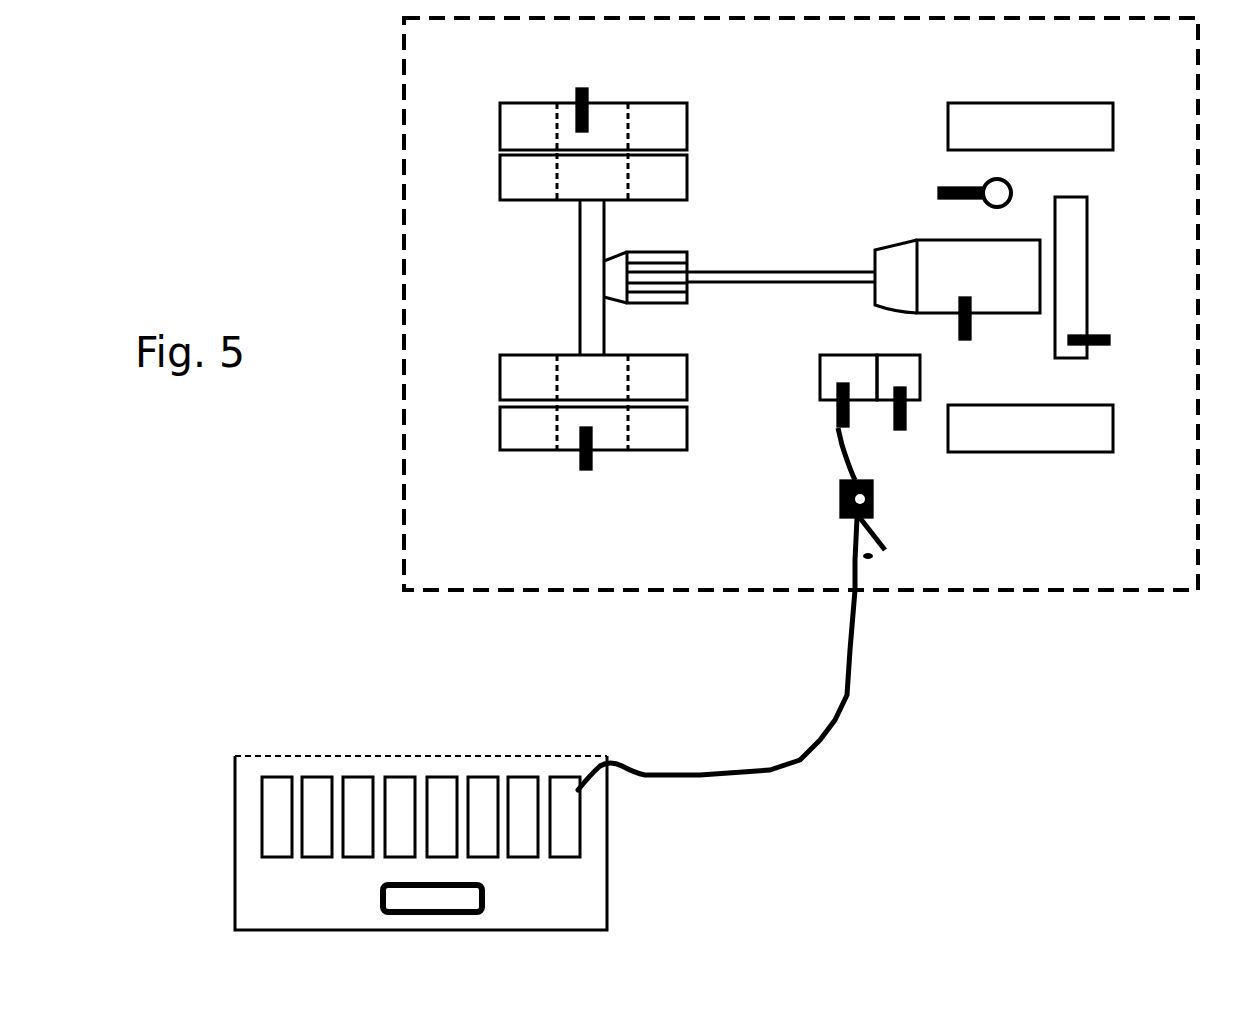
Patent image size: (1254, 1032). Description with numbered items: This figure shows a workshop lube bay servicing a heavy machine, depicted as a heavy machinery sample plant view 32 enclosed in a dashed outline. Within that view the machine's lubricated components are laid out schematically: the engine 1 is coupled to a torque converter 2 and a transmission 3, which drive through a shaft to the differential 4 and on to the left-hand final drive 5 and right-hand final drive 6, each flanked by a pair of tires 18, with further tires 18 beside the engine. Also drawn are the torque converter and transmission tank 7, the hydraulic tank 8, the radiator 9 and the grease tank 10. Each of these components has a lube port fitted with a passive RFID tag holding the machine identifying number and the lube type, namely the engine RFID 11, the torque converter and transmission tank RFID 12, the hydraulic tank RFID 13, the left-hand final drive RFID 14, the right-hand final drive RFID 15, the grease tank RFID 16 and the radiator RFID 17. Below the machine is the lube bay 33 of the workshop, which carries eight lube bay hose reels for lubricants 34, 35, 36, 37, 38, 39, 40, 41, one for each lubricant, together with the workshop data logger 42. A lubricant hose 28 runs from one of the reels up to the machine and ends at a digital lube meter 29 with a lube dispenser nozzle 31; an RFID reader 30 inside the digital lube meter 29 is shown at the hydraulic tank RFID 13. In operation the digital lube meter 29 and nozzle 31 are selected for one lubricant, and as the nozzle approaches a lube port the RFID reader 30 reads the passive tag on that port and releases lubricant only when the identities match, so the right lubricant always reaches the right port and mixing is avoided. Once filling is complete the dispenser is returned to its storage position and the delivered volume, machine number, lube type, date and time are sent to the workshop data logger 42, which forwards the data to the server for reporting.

The engine 1 is at (980, 240).
The torque converter 2 is at (893, 245).
The transmission 3 is at (657, 305).
The differential 4 is at (618, 255).
The left-hand final drive 5 is at (575, 203).
The right-hand final drive 6 is at (575, 353).
The torque converter and transmission tank 7 is at (907, 355).
The hydraulic tank 8 is at (845, 355).
The radiator 9 is at (1090, 243).
The grease tank 10 is at (1000, 178).
The engine RFID 11 is at (966, 342).
The torque converter and transmission tank RFID 12 is at (900, 433).
The hydraulic tank RFID 13 is at (842, 432).
The left-hand final drive RFID 14 is at (582, 473).
The right-hand final drive RFID 15 is at (581, 88).
The grease tank RFID 16 is at (935, 192).
The radiator RFID 17 is at (1118, 333).
The tire 18 is at (500, 124).
The lubricant hose 28 is at (807, 753).
The digital lube meter 29 is at (842, 503).
The RFID reader inside the digital lube meter 30 is at (875, 498).
The lube dispenser nozzle 31 is at (853, 538).
The heavy machinery sample plant view 32 is at (403, 212).
The control unit 33 is at (378, 843).
The lube bay hose reel for lubricants 34 is at (284, 777).
The lube bay hose reel for lubricants 35 is at (324, 777).
The lube bay hose reel for lubricants 36 is at (365, 777).
The lube bay hose reel for lubricants 37 is at (407, 777).
The lube bay hose reel for lubricants 38 is at (449, 777).
The lube bay hose reel for lubricants 39 is at (490, 777).
The lube bay hose reel for lubricants 40 is at (530, 777).
The lube bay hose reel for lubricants 41 is at (572, 777).
The workshop data logger 42 is at (483, 888).